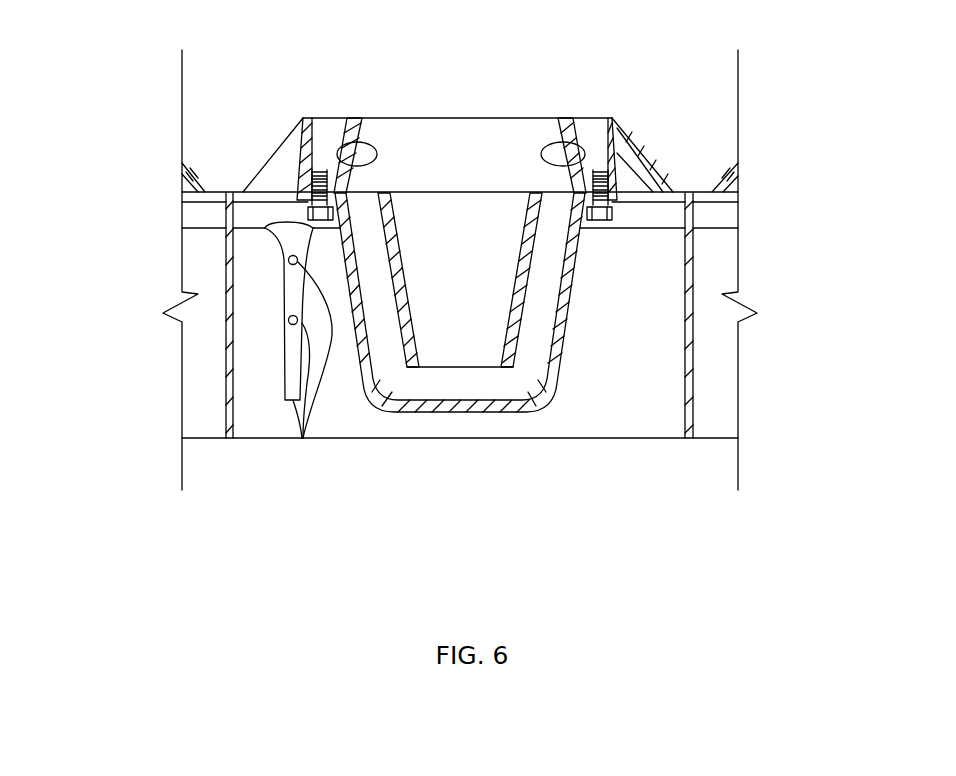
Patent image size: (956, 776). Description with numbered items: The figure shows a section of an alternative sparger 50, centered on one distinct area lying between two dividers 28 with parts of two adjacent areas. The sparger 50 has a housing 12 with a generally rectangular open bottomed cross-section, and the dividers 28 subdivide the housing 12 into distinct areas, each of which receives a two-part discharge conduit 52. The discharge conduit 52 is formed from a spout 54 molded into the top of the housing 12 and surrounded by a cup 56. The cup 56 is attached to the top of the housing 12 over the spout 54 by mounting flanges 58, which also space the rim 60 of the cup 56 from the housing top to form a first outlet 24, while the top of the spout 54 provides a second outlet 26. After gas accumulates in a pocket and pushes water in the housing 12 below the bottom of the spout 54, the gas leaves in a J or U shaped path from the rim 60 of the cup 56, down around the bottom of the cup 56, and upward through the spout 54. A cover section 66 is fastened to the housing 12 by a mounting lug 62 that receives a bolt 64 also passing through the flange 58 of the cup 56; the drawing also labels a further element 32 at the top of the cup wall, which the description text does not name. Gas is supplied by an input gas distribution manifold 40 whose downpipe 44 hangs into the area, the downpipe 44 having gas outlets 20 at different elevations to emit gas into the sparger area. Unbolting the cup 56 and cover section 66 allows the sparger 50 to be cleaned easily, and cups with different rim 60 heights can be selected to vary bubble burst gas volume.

The housing 12 is at (728, 252).
The gas outlet 20 is at (303, 438).
The first outlet 24 is at (552, 207).
The second outlet 26 is at (428, 192).
The divider 28 is at (684, 400).
The flange lip 32 is at (355, 118).
The input gas distribution manifold 40 is at (728, 212).
The downpipe 44 is at (283, 368).
The sparger 50 is at (142, 549).
The two-part discharge conduit 52 is at (421, 452).
The spout 54 is at (512, 237).
The cup 56 is at (566, 345).
The mounting flange 58 is at (615, 208).
The rim 60 is at (373, 197).
The mounting lug 62 is at (618, 170).
The bolt 64 is at (594, 221).
The cover section 66 is at (392, 117).